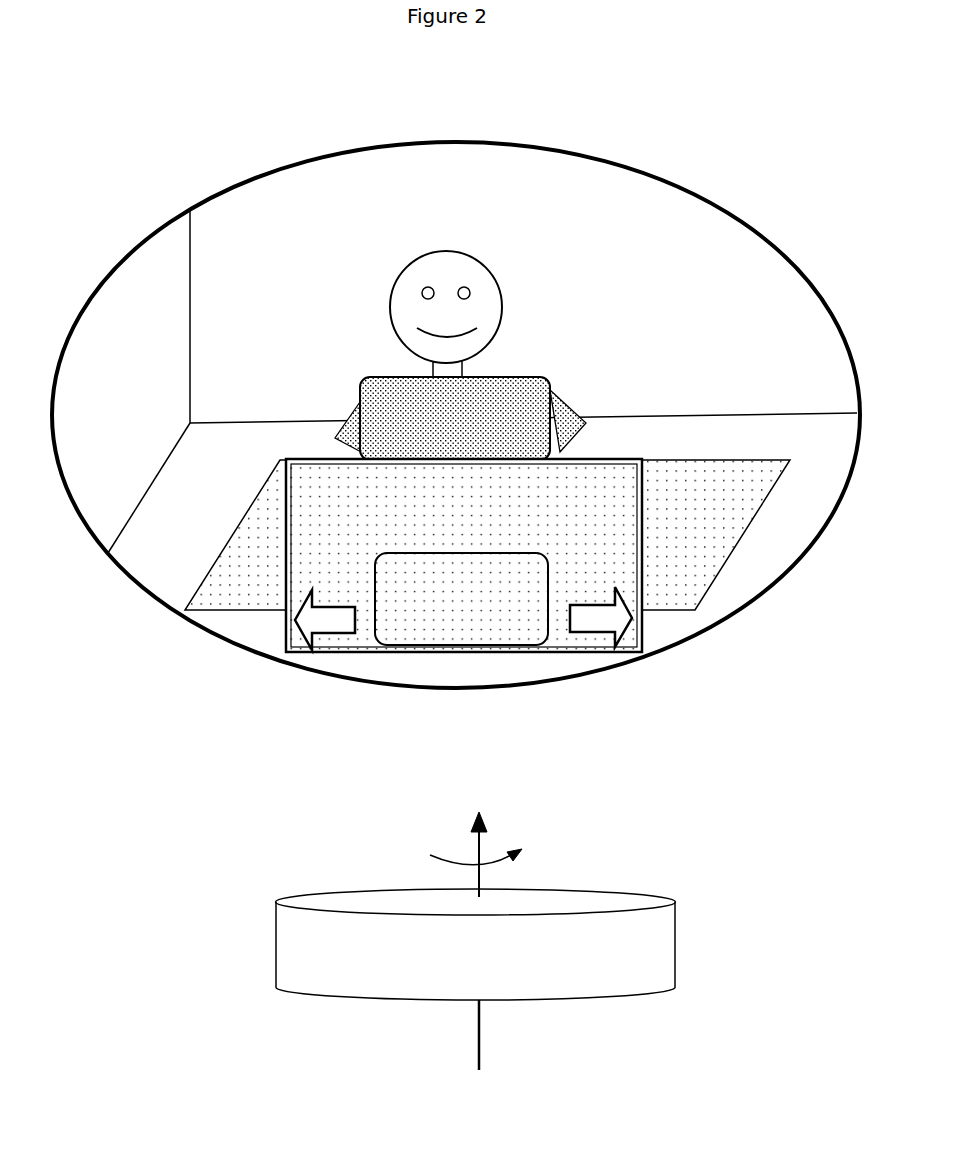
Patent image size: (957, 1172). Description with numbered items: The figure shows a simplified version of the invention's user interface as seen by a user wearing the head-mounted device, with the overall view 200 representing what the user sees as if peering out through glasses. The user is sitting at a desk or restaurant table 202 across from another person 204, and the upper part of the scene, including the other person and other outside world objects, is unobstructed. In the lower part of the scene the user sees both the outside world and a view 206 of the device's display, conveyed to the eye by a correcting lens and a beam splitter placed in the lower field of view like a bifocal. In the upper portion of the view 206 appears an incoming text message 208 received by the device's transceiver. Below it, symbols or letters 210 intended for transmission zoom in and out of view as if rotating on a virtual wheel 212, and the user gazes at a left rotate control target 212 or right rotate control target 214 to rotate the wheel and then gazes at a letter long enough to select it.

The overall view 200 is at (207, 187).
The desk or restaurant table 202 is at (247, 497).
The another person 204 is at (557, 378).
The view of the display 206 is at (628, 452).
The text message 208 is at (618, 490).
The symbols (letters) 210 is at (467, 628).
The virtual wheel / left rotate control target 212 is at (343, 638).
The right rotate control target 214 is at (593, 637).